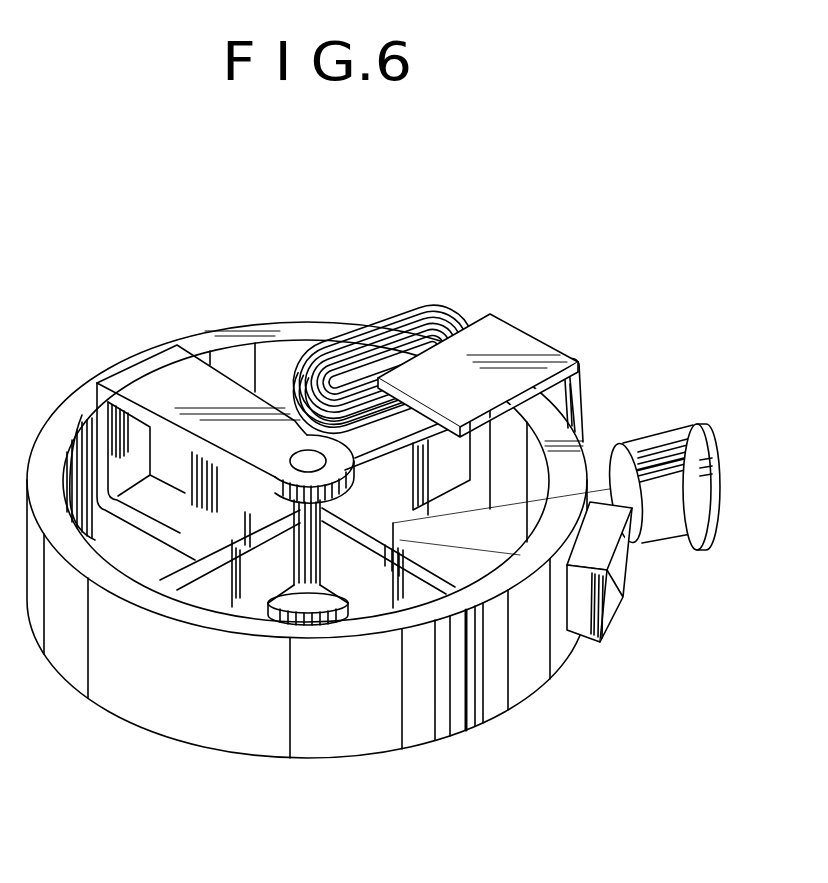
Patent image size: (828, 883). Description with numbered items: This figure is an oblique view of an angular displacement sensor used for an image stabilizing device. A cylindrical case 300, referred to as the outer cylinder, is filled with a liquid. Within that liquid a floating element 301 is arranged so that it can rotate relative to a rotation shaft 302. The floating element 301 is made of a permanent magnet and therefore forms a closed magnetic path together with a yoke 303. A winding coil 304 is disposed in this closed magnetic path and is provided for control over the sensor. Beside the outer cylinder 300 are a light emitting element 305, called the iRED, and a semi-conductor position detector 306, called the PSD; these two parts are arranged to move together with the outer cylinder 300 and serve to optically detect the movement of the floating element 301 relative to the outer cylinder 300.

The cylindrical case 300 is at (360, 733).
The floating element 301 is at (207, 580).
The rotation shaft 302 is at (302, 452).
The yoke 303 is at (503, 337).
The winding coil 304 is at (400, 330).
The light emitting element 305 is at (652, 450).
The semi-conductor position detector 306 is at (620, 580).